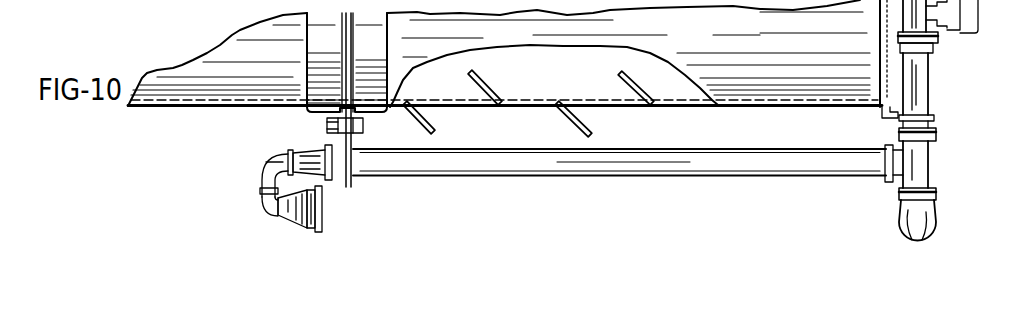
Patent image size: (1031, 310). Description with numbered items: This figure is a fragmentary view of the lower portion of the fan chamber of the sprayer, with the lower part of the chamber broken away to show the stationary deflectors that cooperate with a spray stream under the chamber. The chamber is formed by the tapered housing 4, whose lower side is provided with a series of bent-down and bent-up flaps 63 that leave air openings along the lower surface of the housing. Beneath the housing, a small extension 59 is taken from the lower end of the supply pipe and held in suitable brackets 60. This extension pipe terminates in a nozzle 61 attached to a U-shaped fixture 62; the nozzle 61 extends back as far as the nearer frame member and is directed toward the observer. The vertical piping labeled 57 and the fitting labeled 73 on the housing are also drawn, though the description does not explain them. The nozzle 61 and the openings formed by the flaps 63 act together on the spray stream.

The tapered housing 4 is at (847, 86).
The supply pipe 57 is at (978, 12).
The small extension 59 is at (786, 168).
The brackets 60 is at (355, 185).
The nozzle 61 is at (323, 215).
The U-shaped fixture 62 is at (262, 183).
The flaps 63 is at (486, 76).
The fitting 73 is at (357, 49).